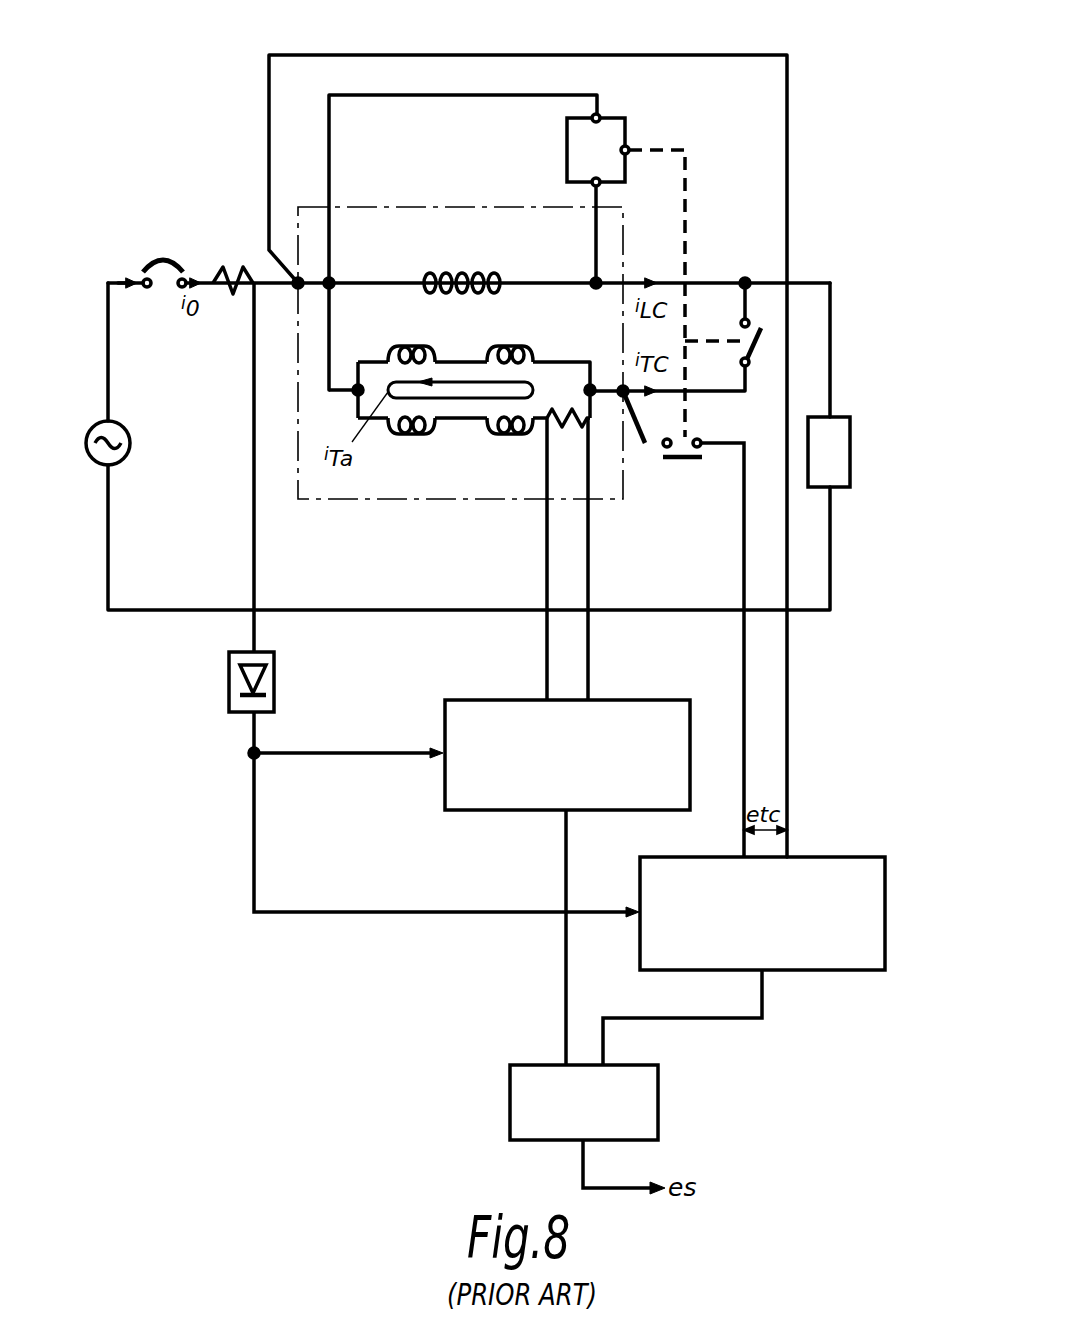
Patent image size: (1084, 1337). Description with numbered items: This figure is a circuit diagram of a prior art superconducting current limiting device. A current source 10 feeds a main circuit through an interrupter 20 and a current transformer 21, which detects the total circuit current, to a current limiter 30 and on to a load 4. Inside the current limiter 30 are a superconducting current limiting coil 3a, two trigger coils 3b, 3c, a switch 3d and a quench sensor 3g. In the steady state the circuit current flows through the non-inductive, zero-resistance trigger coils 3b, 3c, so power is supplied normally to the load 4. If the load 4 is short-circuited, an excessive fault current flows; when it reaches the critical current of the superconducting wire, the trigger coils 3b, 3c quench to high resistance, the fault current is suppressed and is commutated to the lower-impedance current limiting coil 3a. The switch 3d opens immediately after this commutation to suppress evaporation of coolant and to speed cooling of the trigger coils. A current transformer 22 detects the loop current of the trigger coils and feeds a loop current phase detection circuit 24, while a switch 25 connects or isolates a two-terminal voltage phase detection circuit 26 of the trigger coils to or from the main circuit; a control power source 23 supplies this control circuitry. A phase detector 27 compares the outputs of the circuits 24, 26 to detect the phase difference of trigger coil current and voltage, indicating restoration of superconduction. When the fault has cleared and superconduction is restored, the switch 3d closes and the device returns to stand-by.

The current source 10 is at (123, 428).
The interrupter 20 is at (157, 261).
The current transformer 21 is at (241, 290).
The current limiter 30 is at (357, 205).
The superconducting current limiting coil 3a is at (453, 272).
The trigger coil 3b is at (413, 349).
The trigger coil 3c is at (507, 433).
The switch 3d is at (761, 331).
The quench sensor 3g is at (618, 118).
The current transformer 22 is at (548, 426).
The control power source 23 is at (228, 679).
The loop current phase detection circuit 24 is at (641, 700).
The switch 25 is at (672, 459).
The two-terminal voltage phase detection circuit 26 is at (840, 857).
The phase detector 27 is at (658, 1086).
The load 4 is at (850, 440).